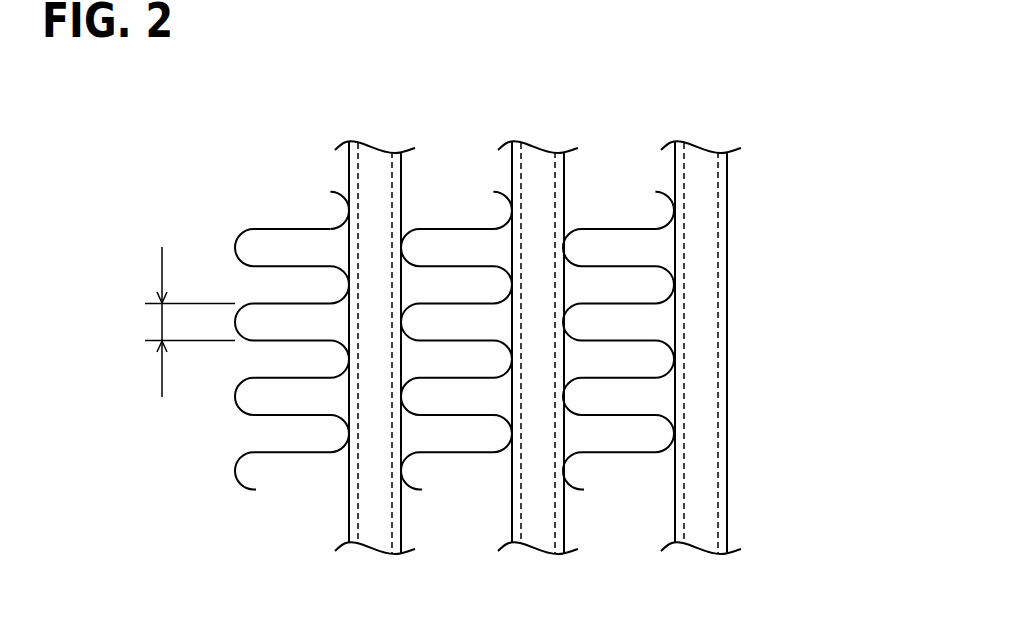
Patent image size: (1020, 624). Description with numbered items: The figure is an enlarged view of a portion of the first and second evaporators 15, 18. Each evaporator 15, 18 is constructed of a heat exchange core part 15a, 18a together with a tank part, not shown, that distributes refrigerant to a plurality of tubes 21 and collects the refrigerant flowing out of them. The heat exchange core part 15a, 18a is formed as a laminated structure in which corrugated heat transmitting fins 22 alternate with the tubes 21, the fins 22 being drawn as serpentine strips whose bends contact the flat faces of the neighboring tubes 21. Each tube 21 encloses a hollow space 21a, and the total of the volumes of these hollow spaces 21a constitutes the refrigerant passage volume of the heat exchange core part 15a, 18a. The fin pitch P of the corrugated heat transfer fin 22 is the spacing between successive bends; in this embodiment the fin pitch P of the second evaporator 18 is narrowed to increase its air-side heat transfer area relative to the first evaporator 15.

The first evaporator 15 is at (697, 134).
The second evaporator 18 is at (623, 296).
The heat exchange core part 15a is at (331, 87).
The heat exchange core part 18a is at (401, 269).
The tube 21 is at (346, 173).
The hollow space 21a is at (372, 177).
The corrugated heat transmitting fin 22 is at (270, 229).
The fin pitch P is at (186, 322).